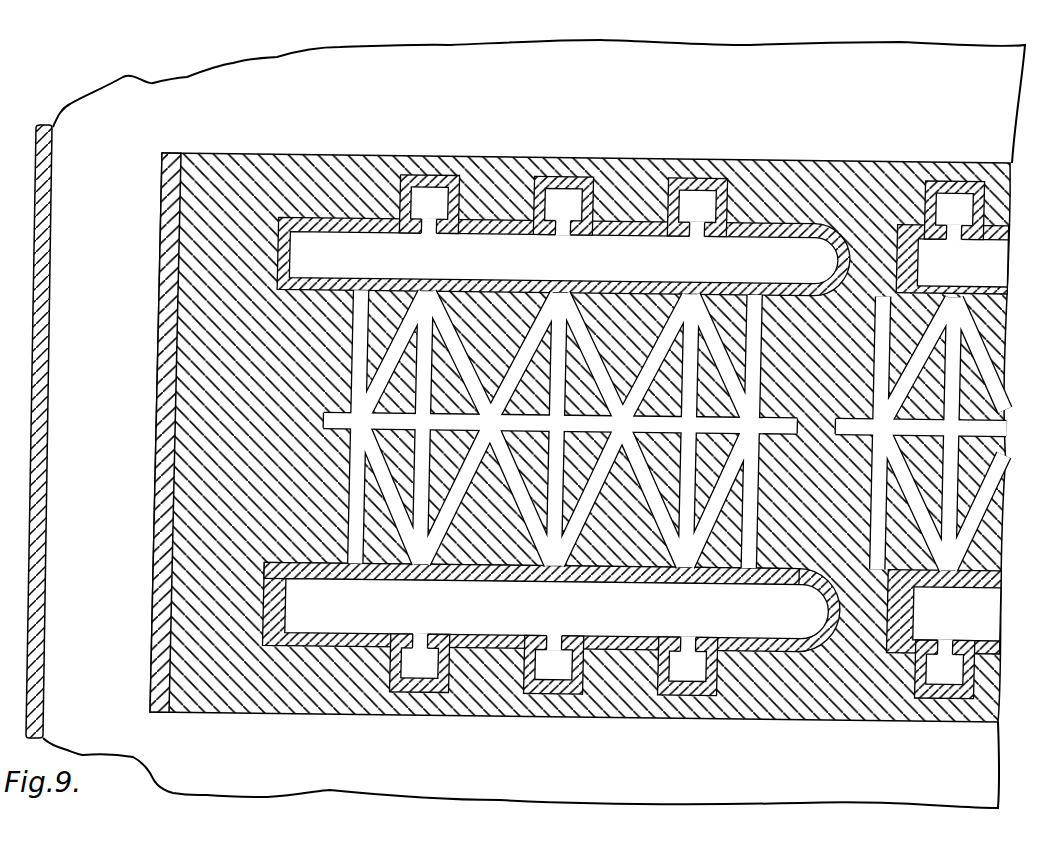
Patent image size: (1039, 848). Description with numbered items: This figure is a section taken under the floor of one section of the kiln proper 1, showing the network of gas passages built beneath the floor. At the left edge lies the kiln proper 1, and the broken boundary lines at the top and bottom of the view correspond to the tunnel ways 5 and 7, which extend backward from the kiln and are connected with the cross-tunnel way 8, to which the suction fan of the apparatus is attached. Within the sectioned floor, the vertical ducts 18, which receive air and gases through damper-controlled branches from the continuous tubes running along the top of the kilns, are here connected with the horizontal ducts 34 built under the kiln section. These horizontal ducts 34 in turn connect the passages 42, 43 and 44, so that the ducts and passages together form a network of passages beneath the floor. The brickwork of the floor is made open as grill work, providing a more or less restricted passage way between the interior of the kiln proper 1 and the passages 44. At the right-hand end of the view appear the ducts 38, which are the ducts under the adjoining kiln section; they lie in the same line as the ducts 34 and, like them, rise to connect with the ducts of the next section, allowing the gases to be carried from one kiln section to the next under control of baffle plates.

The kiln proper 1 is at (31, 431).
The tunnel way 5 is at (248, 85).
The tunnel way 7 is at (180, 765).
The cross-tunnel way 8 is at (62, 511).
The vertical ducts 18 is at (547, 186).
The horizontal ducts 34 is at (556, 439).
The ducts under section Y 38 is at (930, 630).
The passage 42 is at (618, 568).
The passage 43 is at (660, 430).
The passages 44 is at (665, 457).